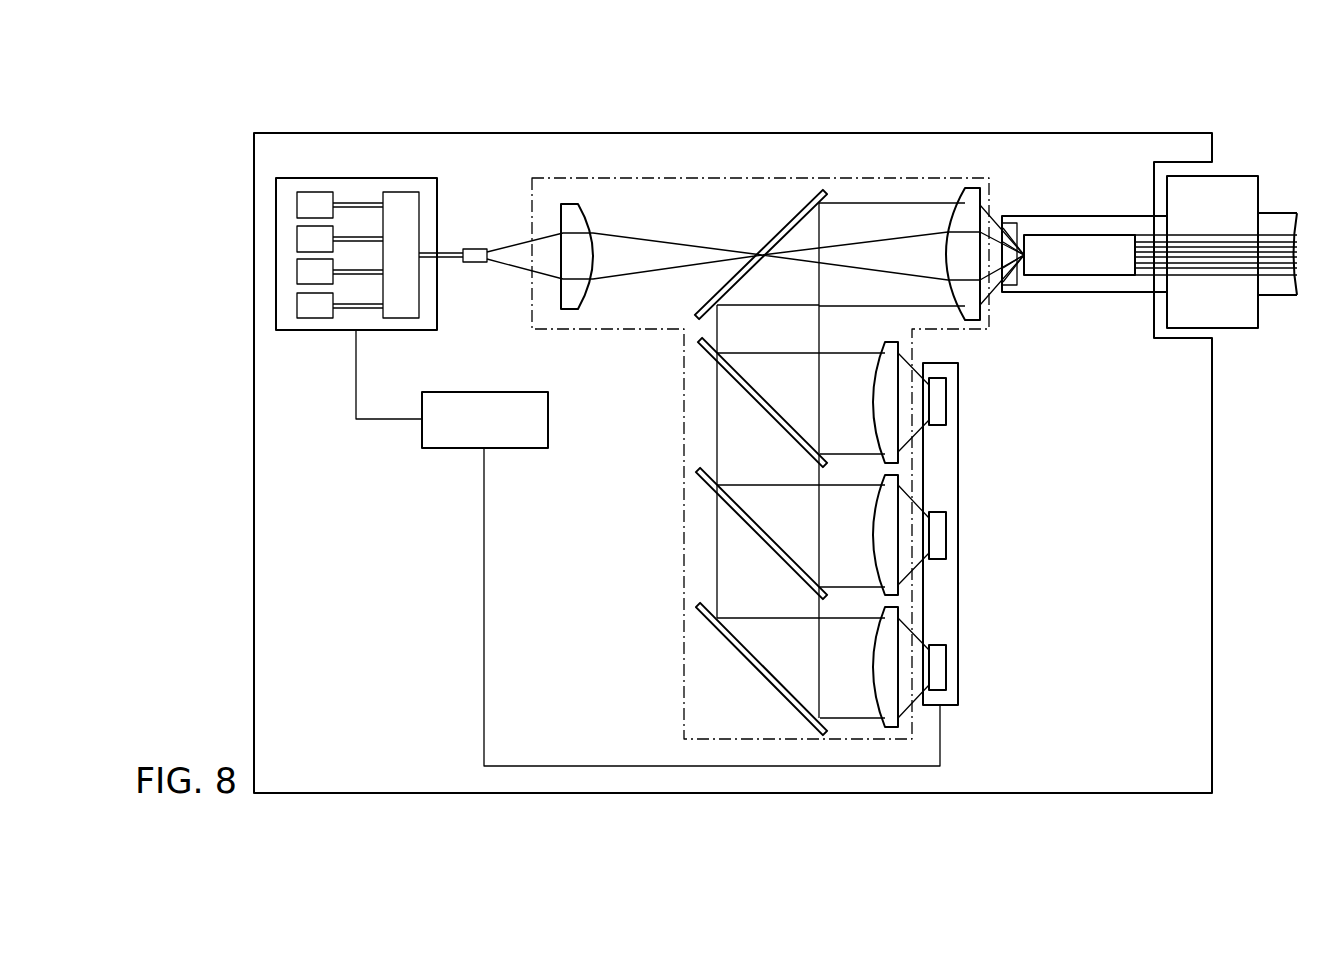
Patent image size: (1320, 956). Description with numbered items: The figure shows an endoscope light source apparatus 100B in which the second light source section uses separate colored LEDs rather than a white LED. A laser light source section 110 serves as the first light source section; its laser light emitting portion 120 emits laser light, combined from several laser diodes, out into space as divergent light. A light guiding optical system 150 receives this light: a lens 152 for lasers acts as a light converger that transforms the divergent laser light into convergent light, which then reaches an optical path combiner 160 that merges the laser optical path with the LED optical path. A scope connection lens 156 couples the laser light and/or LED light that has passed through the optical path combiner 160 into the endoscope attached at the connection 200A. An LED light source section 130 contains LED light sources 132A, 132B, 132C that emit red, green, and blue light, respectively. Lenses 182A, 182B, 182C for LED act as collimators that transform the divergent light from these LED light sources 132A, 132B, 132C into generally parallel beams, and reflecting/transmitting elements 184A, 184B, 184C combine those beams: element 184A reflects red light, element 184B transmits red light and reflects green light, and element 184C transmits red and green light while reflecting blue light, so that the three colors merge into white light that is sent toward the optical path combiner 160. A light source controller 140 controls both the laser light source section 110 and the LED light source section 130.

The endoscope light source apparatus 100B is at (766, 111).
The laser light source section 110 is at (357, 178).
The laser light emitting portion 120 is at (472, 249).
The LED light source section 130 is at (950, 708).
The LED light source 132A is at (946, 665).
The LED light source 132B is at (946, 533).
The LED light source 132C is at (946, 400).
The light source controller 140 is at (485, 392).
The light guiding optical system 150 is at (894, 178).
The lens for lasers 152 is at (571, 204).
The scope connection lens 156 is at (970, 188).
The optical path combiner 160 is at (803, 195).
The lens for LED 182A is at (898, 610).
The lens for LED 182B is at (898, 478).
The lens for LED 182C is at (898, 345).
The reflecting/transmitting element 184A is at (703, 624).
The reflecting/transmitting element 184B is at (703, 485).
The reflecting/transmitting element 184C is at (703, 352).
The light guide connector 200A is at (1257, 167).